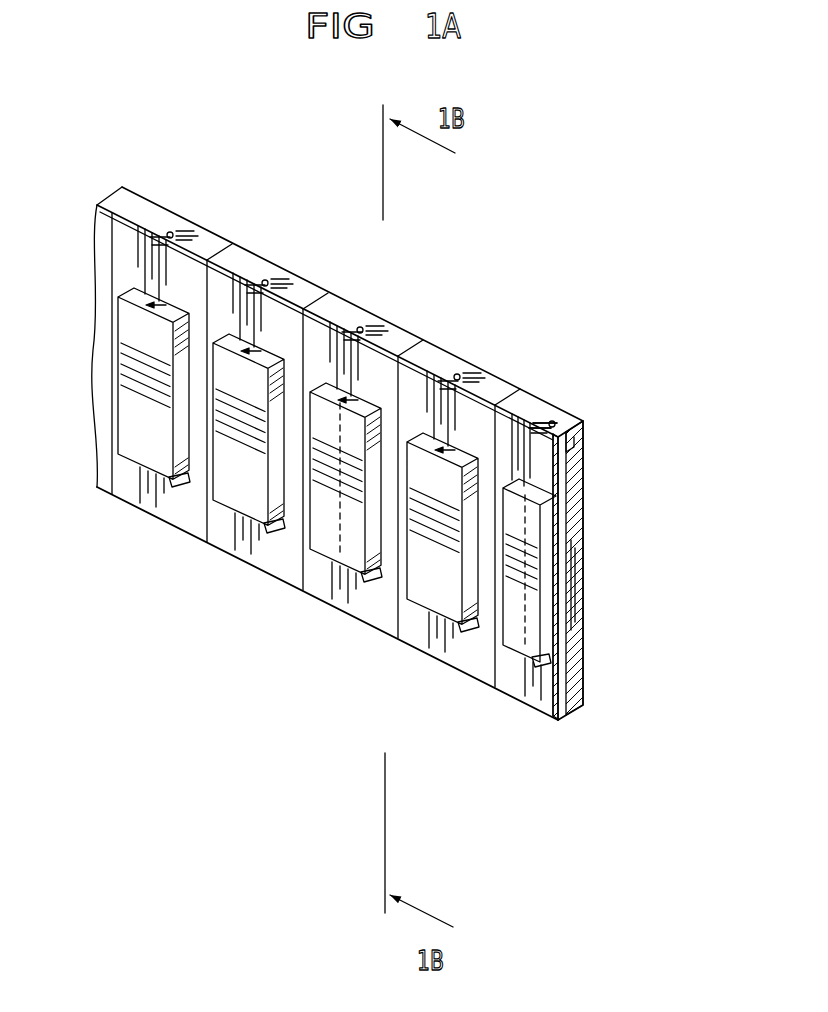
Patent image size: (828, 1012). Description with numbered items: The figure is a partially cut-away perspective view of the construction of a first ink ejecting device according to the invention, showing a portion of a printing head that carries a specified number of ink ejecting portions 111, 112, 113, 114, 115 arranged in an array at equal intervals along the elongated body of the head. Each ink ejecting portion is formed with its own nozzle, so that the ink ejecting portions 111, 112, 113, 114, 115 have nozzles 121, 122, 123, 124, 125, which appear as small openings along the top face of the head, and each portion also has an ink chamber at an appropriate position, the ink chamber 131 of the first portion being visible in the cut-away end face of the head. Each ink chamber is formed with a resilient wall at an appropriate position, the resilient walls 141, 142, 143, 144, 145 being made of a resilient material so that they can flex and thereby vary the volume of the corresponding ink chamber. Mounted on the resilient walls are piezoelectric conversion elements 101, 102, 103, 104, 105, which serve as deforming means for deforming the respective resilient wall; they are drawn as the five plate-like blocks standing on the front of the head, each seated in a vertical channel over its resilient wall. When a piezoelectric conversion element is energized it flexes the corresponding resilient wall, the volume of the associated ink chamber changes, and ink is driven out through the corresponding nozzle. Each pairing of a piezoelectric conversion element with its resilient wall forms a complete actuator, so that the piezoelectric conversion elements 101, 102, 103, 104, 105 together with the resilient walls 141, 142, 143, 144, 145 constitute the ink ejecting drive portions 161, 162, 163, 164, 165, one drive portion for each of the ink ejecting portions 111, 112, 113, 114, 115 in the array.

The piezoelectric conversion element 101 is at (561, 712).
The piezoelectric conversion element 102 is at (451, 630).
The piezoelectric conversion element 103 is at (357, 578).
The piezoelectric conversion element 104 is at (263, 530).
The piezoelectric conversion element 105 is at (182, 474).
The ink ejecting portion 111 is at (558, 402).
The ink ejecting portion 112 is at (465, 350).
The ink ejecting portion 113 is at (368, 304).
The ink ejecting portion 114 is at (267, 252).
The ink ejecting portion 115 is at (172, 205).
The nozzle 121 is at (561, 431).
The nozzle 122 is at (459, 375).
The nozzle 123 is at (364, 331).
The nozzle 124 is at (267, 280).
The nozzle 125 is at (172, 232).
The ink chamber 131 is at (570, 603).
The resilient wall 141 is at (562, 516).
The resilient wall 142 is at (440, 368).
The resilient wall 143 is at (343, 327).
The resilient wall 144 is at (240, 275).
The resilient wall 145 is at (143, 227).
The ink ejecting drive portion 161 is at (541, 706).
The ink ejecting drive portion 162 is at (476, 633).
The ink ejecting drive portion 163 is at (380, 584).
The ink ejecting drive portion 164 is at (280, 532).
The ink ejecting drive portion 165 is at (161, 480).